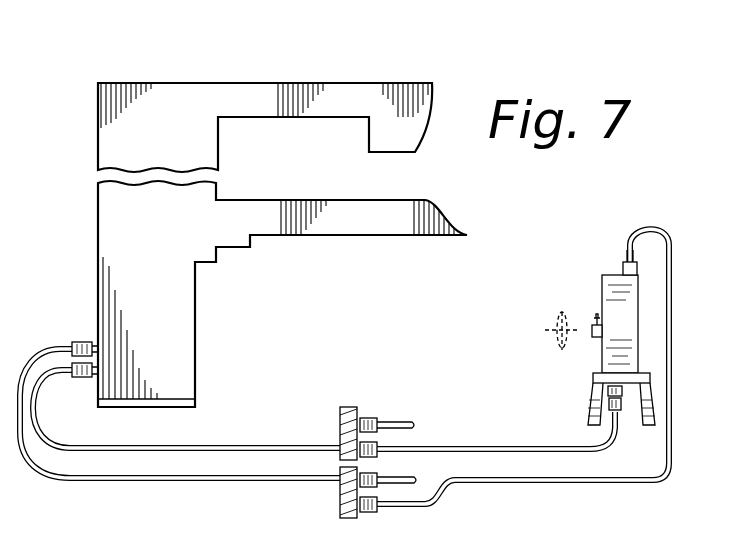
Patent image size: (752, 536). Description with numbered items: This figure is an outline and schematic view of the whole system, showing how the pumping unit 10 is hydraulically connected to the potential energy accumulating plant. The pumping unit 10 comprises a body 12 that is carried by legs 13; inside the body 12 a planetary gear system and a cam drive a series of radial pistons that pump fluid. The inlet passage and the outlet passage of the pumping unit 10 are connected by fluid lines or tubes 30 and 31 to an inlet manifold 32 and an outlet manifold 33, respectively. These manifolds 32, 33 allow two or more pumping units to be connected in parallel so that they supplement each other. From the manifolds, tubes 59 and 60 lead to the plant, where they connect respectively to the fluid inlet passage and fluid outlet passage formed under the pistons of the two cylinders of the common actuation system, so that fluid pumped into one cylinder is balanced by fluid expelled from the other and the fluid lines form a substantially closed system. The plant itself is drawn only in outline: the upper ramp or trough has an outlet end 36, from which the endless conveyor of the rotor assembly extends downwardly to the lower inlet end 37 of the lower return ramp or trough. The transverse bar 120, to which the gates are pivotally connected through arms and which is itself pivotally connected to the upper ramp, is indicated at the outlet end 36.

The pumping unit 10 is at (592, 326).
The body 12 is at (612, 311).
The legs 13 is at (593, 380).
The fluid line 30 is at (569, 481).
The fluid line 31 is at (452, 447).
The inlet manifold 32 is at (340, 503).
The outlet manifold 33 is at (340, 418).
The outlet end 36 is at (406, 100).
The lower inlet end 37 is at (408, 218).
The tube 59 is at (144, 447).
The tube 60 is at (206, 479).
The transverse bar 120 is at (423, 143).